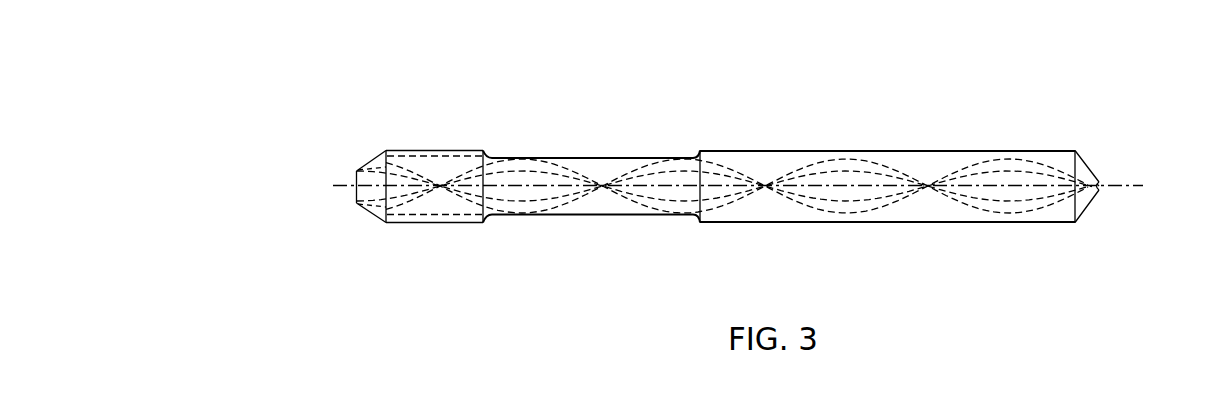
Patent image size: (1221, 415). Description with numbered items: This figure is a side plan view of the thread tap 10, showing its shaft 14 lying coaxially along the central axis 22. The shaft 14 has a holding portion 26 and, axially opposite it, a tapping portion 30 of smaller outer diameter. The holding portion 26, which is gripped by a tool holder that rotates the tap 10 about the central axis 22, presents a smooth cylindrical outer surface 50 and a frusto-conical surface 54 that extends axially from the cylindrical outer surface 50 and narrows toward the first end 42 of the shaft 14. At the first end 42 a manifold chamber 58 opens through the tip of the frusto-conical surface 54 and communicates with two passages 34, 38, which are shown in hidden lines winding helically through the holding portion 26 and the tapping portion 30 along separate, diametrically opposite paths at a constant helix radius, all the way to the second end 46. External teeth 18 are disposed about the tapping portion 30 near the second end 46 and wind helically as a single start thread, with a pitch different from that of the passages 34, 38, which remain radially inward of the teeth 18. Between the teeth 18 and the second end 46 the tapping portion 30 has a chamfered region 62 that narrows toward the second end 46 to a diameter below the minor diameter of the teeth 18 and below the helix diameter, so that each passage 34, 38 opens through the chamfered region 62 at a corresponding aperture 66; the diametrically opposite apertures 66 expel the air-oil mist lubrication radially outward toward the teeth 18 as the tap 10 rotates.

The thread tap 10 is at (659, 50).
The shaft 14 is at (598, 170).
The external teeth 18 is at (443, 149).
The central axis 22 is at (1117, 192).
The holding portion 26 is at (955, 163).
The tapping portion 30 is at (443, 223).
The passage 34 is at (848, 158).
The passage 38 is at (862, 213).
The first end 42 is at (1093, 182).
The second end 46 is at (357, 175).
The cylindrical outer surface 50 is at (925, 150).
The frusto-conical surface 54 is at (1088, 155).
The manifold chamber 58 is at (1097, 183).
The chamfered region 62 is at (382, 158).
The aperture 66 is at (363, 160).